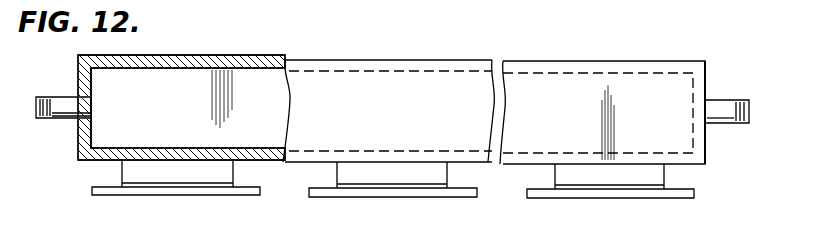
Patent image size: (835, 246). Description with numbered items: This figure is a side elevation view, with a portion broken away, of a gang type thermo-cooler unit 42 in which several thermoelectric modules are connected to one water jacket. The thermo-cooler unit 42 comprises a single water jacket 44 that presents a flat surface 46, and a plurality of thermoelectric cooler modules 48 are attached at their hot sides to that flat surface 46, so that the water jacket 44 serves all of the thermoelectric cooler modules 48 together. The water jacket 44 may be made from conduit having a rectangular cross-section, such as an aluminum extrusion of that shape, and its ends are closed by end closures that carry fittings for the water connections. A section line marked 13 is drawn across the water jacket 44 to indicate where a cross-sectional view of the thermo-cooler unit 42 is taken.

The section line 13- 13 is at (284, 13).
The housing assembly 42 is at (570, 54).
The tubular body 44 is at (398, 79).
The break / joint 46 is at (283, 163).
The support base 48 is at (158, 180).